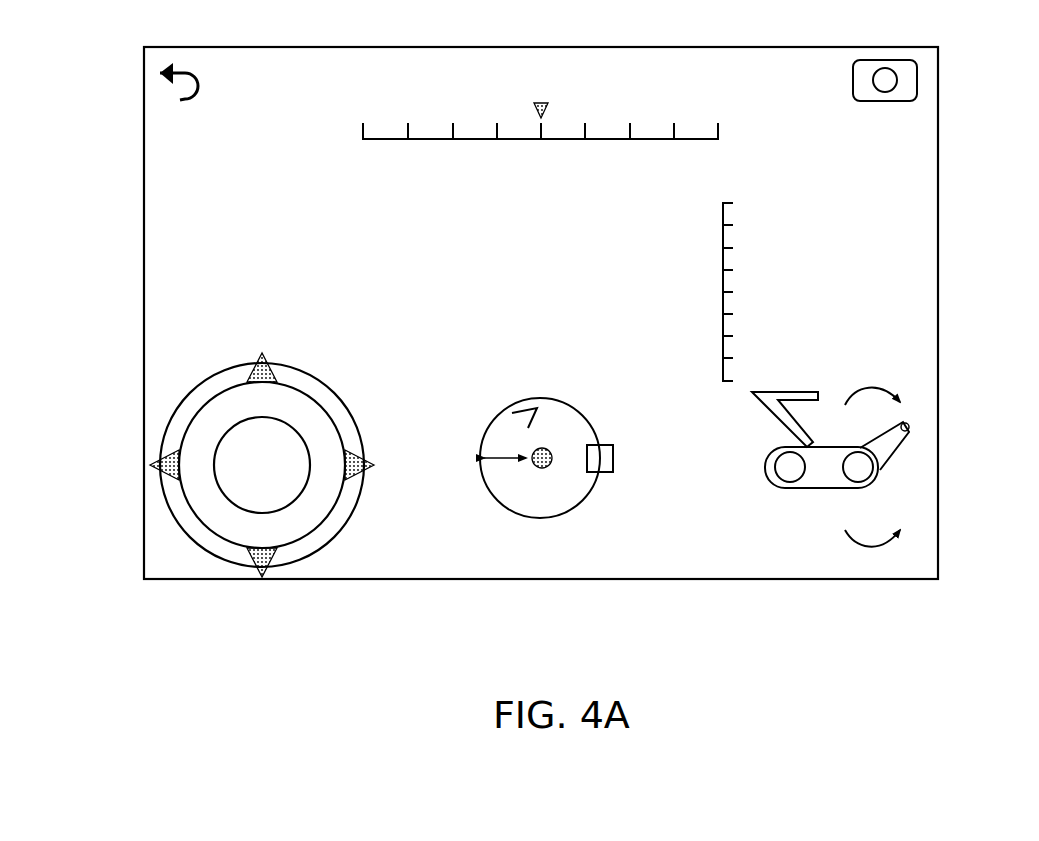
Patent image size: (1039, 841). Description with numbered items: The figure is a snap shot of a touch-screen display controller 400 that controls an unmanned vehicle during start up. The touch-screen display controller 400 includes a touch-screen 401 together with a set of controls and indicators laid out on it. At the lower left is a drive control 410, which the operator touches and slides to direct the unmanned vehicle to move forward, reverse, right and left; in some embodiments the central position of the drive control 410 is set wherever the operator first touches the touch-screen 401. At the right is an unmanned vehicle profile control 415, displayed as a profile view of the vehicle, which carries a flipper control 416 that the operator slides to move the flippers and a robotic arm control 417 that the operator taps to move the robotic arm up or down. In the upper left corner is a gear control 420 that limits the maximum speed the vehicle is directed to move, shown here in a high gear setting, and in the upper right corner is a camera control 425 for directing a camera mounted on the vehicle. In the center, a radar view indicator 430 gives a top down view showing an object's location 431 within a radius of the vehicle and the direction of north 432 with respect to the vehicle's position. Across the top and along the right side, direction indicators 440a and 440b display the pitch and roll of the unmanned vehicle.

The touch-screen display controller 400 is at (518, 580).
The touch-screen 401 is at (273, 270).
The drive control 410 is at (295, 500).
The unmanned vehicle profile control 415 is at (815, 488).
The flipper control 416 is at (905, 440).
The robotic arm control 417 is at (782, 390).
The gear control 420 is at (160, 130).
The camera control 425 is at (917, 84).
The radar view indicator 430 is at (585, 412).
The object's location 431 is at (512, 410).
The direction of north 432 is at (613, 458).
The direction indicator 440a is at (562, 140).
The direction indicator 440b is at (723, 239).